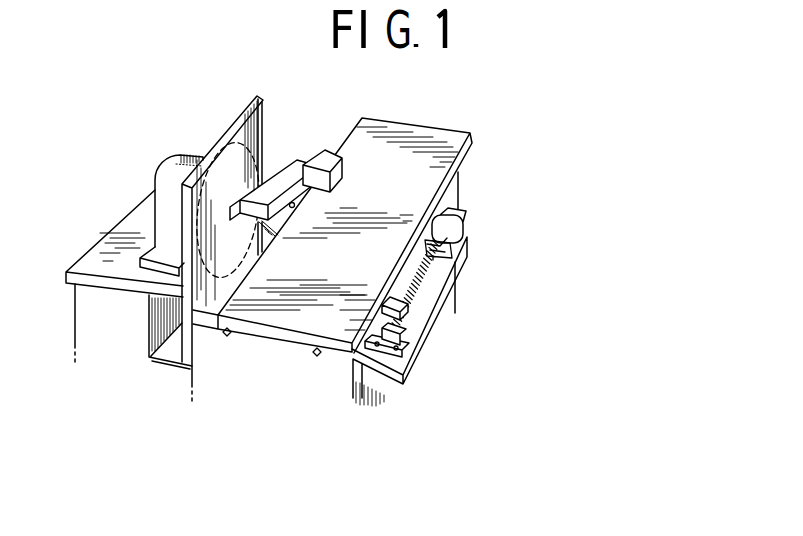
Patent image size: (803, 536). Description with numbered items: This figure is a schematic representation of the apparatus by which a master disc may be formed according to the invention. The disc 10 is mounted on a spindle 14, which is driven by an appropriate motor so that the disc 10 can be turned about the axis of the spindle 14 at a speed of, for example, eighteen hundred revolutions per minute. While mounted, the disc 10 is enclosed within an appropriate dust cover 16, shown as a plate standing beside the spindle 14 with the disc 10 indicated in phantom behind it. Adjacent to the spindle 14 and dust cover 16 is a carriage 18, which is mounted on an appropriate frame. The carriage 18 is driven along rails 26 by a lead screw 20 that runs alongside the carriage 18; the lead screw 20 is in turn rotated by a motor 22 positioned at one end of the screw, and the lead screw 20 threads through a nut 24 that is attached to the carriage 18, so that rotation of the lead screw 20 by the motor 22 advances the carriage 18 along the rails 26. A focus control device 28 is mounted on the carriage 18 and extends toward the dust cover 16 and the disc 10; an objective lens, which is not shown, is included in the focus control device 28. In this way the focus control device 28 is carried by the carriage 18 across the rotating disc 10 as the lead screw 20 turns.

The disc 10 is at (197, 194).
The spindle 14 is at (177, 154).
The dust cover 16 is at (264, 58).
The carriage 18 is at (469, 136).
The lead screw 20 is at (424, 271).
The motor 22 is at (455, 218).
The nut 24 is at (412, 307).
The rails 26 is at (317, 357).
The focus control device 28 is at (243, 212).